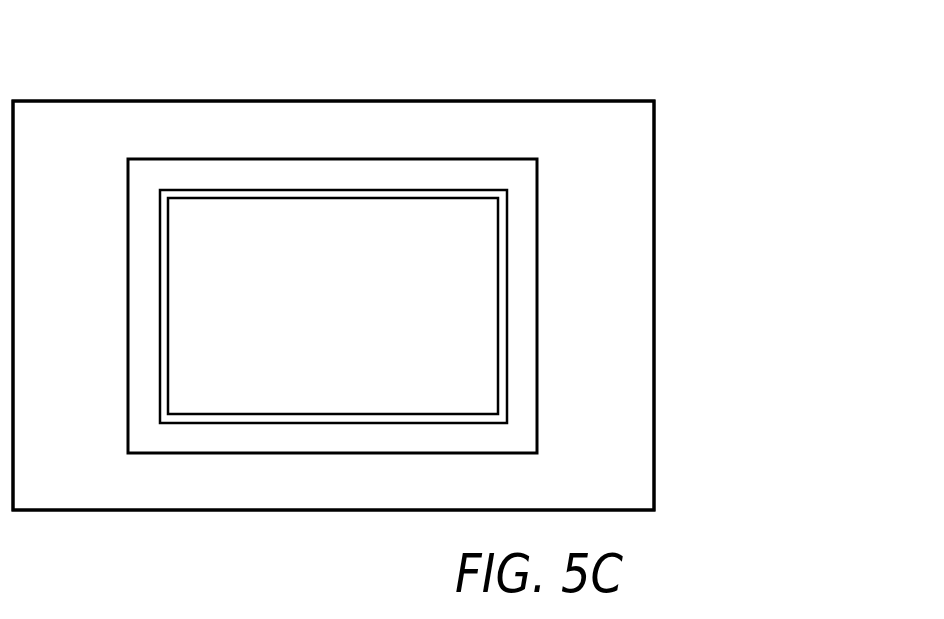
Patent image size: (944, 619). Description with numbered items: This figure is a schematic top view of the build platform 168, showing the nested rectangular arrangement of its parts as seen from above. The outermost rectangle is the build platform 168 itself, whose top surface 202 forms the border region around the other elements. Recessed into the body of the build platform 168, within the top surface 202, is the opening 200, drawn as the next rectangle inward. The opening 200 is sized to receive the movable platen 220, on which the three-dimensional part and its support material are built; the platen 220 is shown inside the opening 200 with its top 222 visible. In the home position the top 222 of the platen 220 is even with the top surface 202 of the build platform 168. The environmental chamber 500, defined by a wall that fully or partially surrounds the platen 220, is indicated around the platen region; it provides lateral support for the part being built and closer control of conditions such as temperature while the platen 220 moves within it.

The build platform 168 is at (655, 308).
The opening 200 is at (207, 190).
The top surface 202 is at (559, 145).
The movable platen 220 is at (343, 197).
The top of the platen 222 is at (424, 256).
The environmental chamber 500 is at (537, 222).